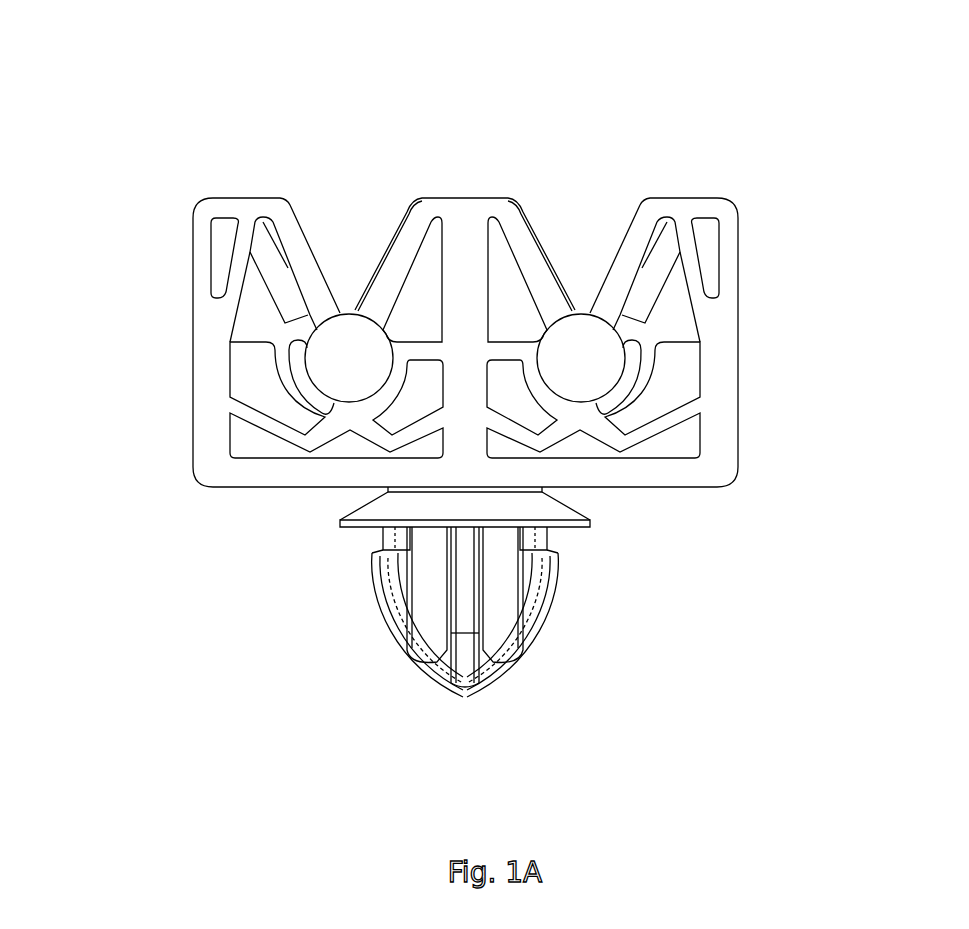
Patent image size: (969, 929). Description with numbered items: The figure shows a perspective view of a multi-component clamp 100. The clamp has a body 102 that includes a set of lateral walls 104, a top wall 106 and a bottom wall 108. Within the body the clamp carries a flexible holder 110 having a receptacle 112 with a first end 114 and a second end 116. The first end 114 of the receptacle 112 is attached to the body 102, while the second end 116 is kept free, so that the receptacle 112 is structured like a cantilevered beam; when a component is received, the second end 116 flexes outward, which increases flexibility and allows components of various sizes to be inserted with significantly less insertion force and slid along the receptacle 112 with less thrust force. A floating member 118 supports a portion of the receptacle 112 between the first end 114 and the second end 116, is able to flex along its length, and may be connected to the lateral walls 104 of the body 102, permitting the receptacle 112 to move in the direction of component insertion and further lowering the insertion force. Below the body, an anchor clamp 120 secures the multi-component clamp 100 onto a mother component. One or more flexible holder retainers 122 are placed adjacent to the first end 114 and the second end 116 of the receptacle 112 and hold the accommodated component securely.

The multi-component clamp 100 is at (507, 148).
The body 102 is at (705, 180).
The lateral walls 104 is at (190, 378).
The top wall 106 is at (228, 490).
The bottom wall 108 is at (258, 198).
The flexible holder 110 is at (660, 312).
The receptacle 112 is at (640, 377).
The first end 114 is at (513, 337).
The second end 116 is at (625, 337).
The floating member 118 is at (660, 432).
The anchor clamp 120 is at (533, 623).
The flexible holder retainer 122 is at (613, 253).